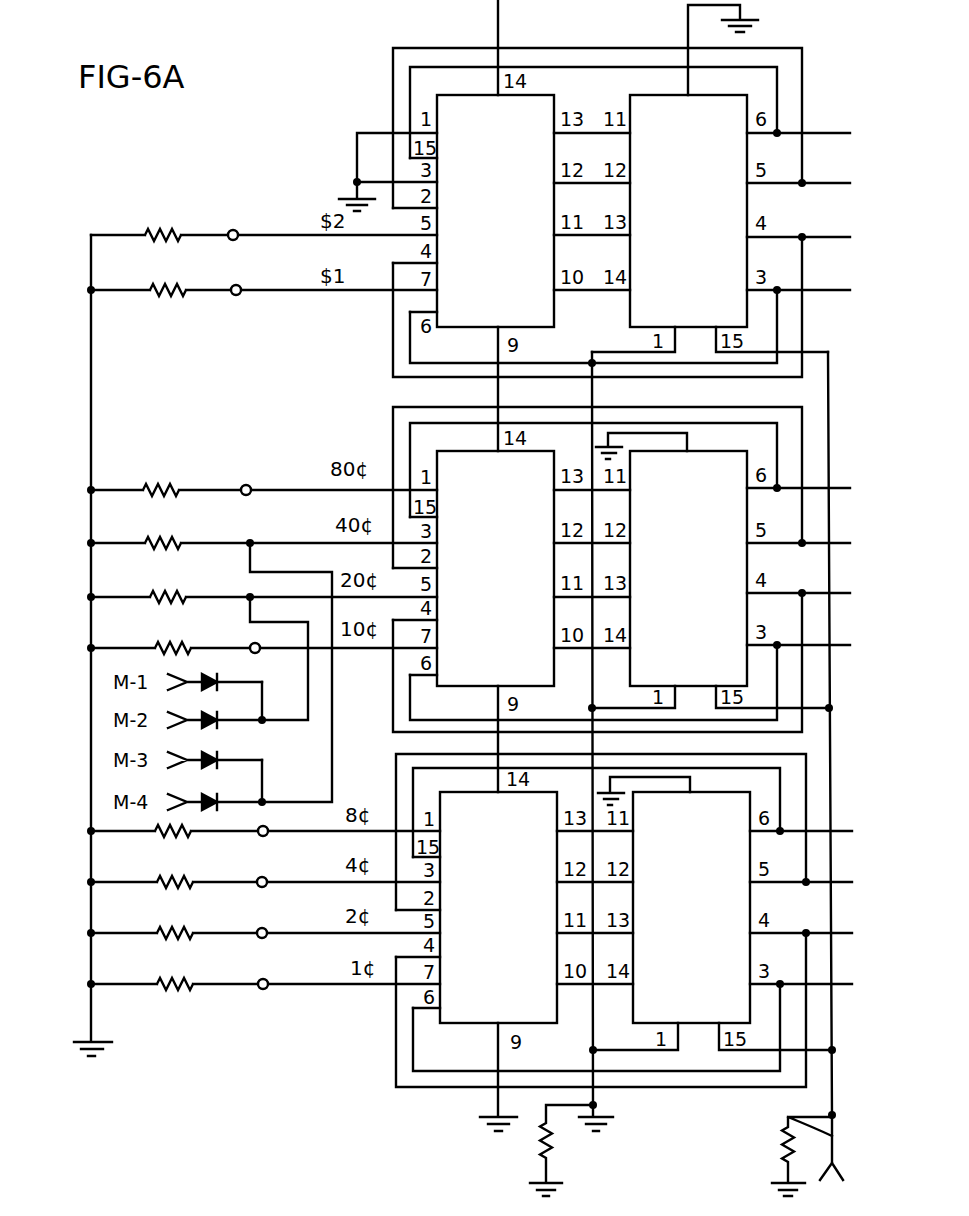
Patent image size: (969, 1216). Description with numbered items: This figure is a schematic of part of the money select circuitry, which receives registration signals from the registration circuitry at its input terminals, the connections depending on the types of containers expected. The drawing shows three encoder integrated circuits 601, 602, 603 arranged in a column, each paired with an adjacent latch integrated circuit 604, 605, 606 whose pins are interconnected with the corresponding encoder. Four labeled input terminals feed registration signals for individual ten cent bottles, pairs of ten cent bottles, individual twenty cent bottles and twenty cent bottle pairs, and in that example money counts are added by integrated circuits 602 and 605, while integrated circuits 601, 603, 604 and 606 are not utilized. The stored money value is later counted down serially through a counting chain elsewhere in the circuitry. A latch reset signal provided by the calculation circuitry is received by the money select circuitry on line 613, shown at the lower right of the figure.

The integrated circuit 601 is at (478, 222).
The integrated circuit 602 is at (478, 576).
The integrated circuit 603 is at (481, 899).
The integrated circuit 604 is at (671, 222).
The integrated circuit 605 is at (671, 576).
The integrated circuit 606 is at (674, 899).
The line 613 is at (788, 1117).